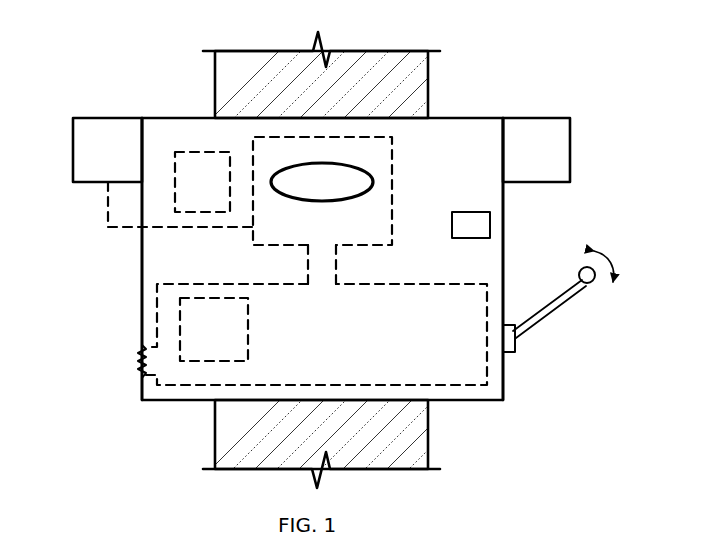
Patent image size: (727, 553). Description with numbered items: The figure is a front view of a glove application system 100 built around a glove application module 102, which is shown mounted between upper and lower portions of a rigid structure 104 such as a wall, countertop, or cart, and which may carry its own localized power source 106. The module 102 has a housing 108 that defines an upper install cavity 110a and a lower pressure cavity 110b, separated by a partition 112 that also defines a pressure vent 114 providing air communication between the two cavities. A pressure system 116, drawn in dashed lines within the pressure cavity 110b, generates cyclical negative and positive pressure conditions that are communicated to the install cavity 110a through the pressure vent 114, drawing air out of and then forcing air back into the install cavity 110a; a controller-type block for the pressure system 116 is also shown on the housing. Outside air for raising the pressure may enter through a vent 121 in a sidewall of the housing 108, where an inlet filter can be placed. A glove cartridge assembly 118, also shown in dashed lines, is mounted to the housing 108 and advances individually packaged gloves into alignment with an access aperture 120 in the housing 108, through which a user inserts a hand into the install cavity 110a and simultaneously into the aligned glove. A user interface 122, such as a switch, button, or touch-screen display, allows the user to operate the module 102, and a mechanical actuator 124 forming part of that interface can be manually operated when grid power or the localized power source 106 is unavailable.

The glove application system 100 is at (90, 42).
The glove application module 102 is at (140, 400).
The rigid structure 104 is at (428, 84).
The localized power source 106 is at (552, 162).
The housing 108 is at (142, 277).
The install cavity 110a is at (383, 162).
The pressure cavity 110b is at (462, 374).
The partition 112 is at (445, 263).
The pressure vent 114 is at (320, 277).
The pressure system 116 is at (123, 162).
The glove cartridge assembly 118 is at (219, 196).
The access aperture 120 is at (350, 183).
The vent 121 is at (138, 362).
The user interface 122 is at (490, 212).
The mechanical actuator 124 is at (553, 318).